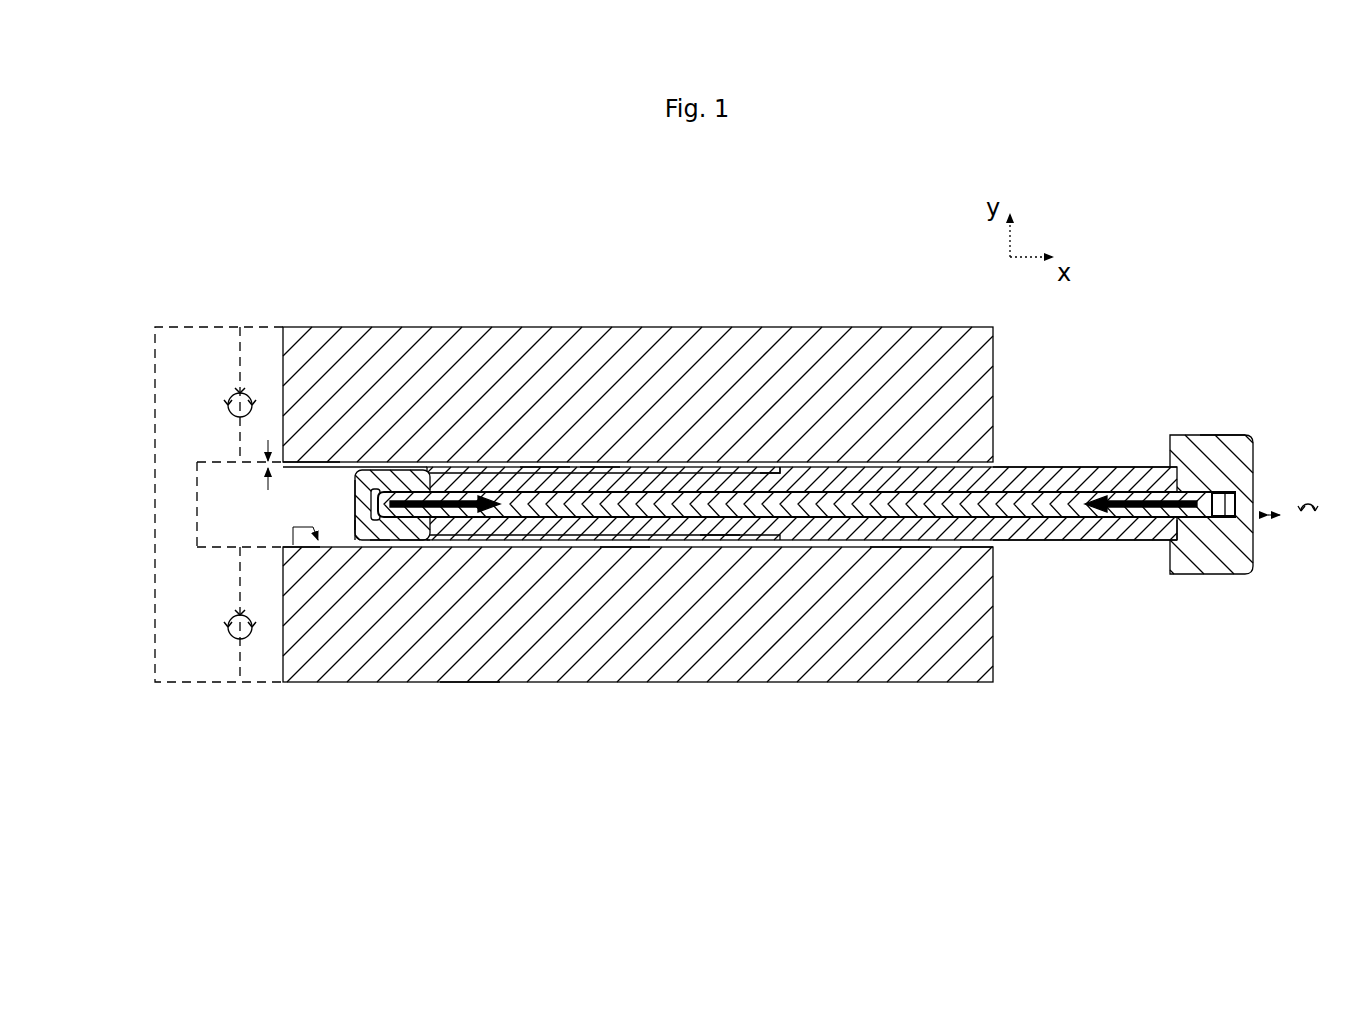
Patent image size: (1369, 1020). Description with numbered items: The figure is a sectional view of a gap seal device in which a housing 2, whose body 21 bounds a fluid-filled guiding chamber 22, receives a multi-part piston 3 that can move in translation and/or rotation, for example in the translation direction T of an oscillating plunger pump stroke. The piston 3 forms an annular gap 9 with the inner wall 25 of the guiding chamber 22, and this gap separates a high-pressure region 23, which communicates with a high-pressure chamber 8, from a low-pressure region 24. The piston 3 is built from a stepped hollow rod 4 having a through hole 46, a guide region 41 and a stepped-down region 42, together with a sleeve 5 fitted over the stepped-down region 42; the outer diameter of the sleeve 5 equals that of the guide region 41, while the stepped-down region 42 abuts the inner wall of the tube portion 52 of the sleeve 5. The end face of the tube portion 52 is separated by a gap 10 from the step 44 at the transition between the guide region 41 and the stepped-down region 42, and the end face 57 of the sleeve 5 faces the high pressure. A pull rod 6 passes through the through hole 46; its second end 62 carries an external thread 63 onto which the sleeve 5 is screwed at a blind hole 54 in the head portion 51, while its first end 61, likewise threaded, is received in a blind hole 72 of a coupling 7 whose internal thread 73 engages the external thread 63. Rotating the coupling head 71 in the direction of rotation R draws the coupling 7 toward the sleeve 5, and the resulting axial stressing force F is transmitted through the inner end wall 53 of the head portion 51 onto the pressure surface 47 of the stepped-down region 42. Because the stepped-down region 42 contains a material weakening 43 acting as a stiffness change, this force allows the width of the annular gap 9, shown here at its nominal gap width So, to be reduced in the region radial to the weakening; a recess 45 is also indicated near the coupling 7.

The housing 2 is at (568, 699).
The piston 3 is at (1068, 546).
The stepped rod 4 is at (821, 465).
The sleeve 5 is at (652, 461).
The pull rod 6 is at (896, 489).
The coupling 7 is at (1199, 433).
The high-pressure chamber 8 is at (197, 527).
The annular gap 9 is at (543, 461).
The gap 10 is at (779, 470).
The body 21 is at (468, 665).
The guiding chamber 22 is at (897, 548).
The high-pressure region 23 is at (320, 500).
The low-pressure region 24 is at (623, 548).
The inner wall 25 is at (298, 548).
The guide region 41 is at (985, 548).
The stepped-down region 42 is at (716, 537).
The material weakening 43 is at (465, 483).
The step 44 is at (773, 535).
The recess 45 is at (1185, 531).
The through hole 46 is at (1042, 487).
The pressure surface 47 is at (415, 531).
The head portion 51 is at (355, 526).
The tube portion 52 is at (597, 469).
The inner end wall 53 is at (447, 483).
The blind hole 54 is at (366, 484).
The end face 57 is at (320, 548).
The first end 61 is at (1205, 495).
The second end 62 is at (389, 490).
The external thread 63 is at (380, 530).
The coupling head 71 is at (1233, 460).
The blind hole 72 is at (1228, 520).
The internal thread 73 is at (1220, 520).
The stressing force F is at (440, 520).
The direction of rotation R is at (1310, 490).
The translation direction T is at (1275, 522).
The nominal gap width So is at (272, 465).